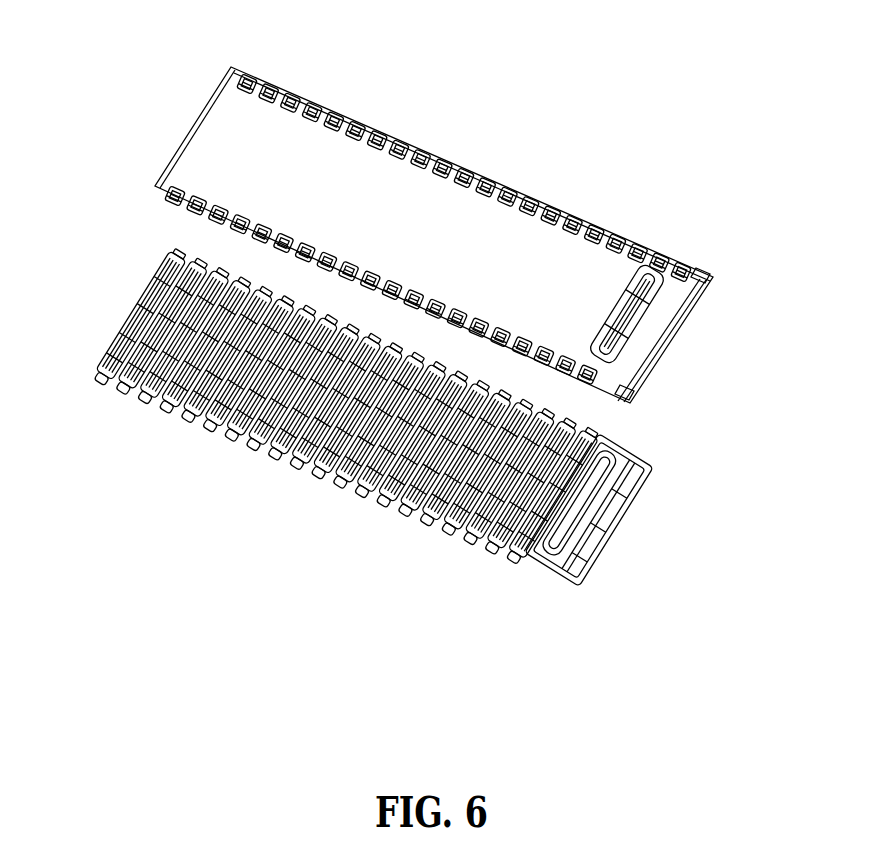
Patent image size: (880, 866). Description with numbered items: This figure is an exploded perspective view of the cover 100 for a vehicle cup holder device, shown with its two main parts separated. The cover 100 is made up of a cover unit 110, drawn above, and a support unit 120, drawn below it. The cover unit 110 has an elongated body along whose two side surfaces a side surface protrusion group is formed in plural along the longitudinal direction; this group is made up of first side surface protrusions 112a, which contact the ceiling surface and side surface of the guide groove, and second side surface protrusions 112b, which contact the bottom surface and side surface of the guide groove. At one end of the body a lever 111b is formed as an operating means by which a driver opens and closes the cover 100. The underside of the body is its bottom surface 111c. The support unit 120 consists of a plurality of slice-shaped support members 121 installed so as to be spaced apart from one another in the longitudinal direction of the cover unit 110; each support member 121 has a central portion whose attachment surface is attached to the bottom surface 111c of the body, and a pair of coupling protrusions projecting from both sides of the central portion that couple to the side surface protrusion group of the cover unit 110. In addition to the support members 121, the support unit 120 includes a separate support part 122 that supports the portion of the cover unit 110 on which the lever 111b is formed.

The cover 100 is at (676, 52).
The cover unit 110 is at (178, 107).
The lever 111b is at (664, 300).
The bottom surface 111c is at (487, 240).
The first side surface protrusions 112a is at (393, 132).
The second side surface protrusions 112b is at (457, 157).
The support unit 120 is at (126, 298).
The support member 121 is at (233, 433).
The support part 122 is at (543, 550).